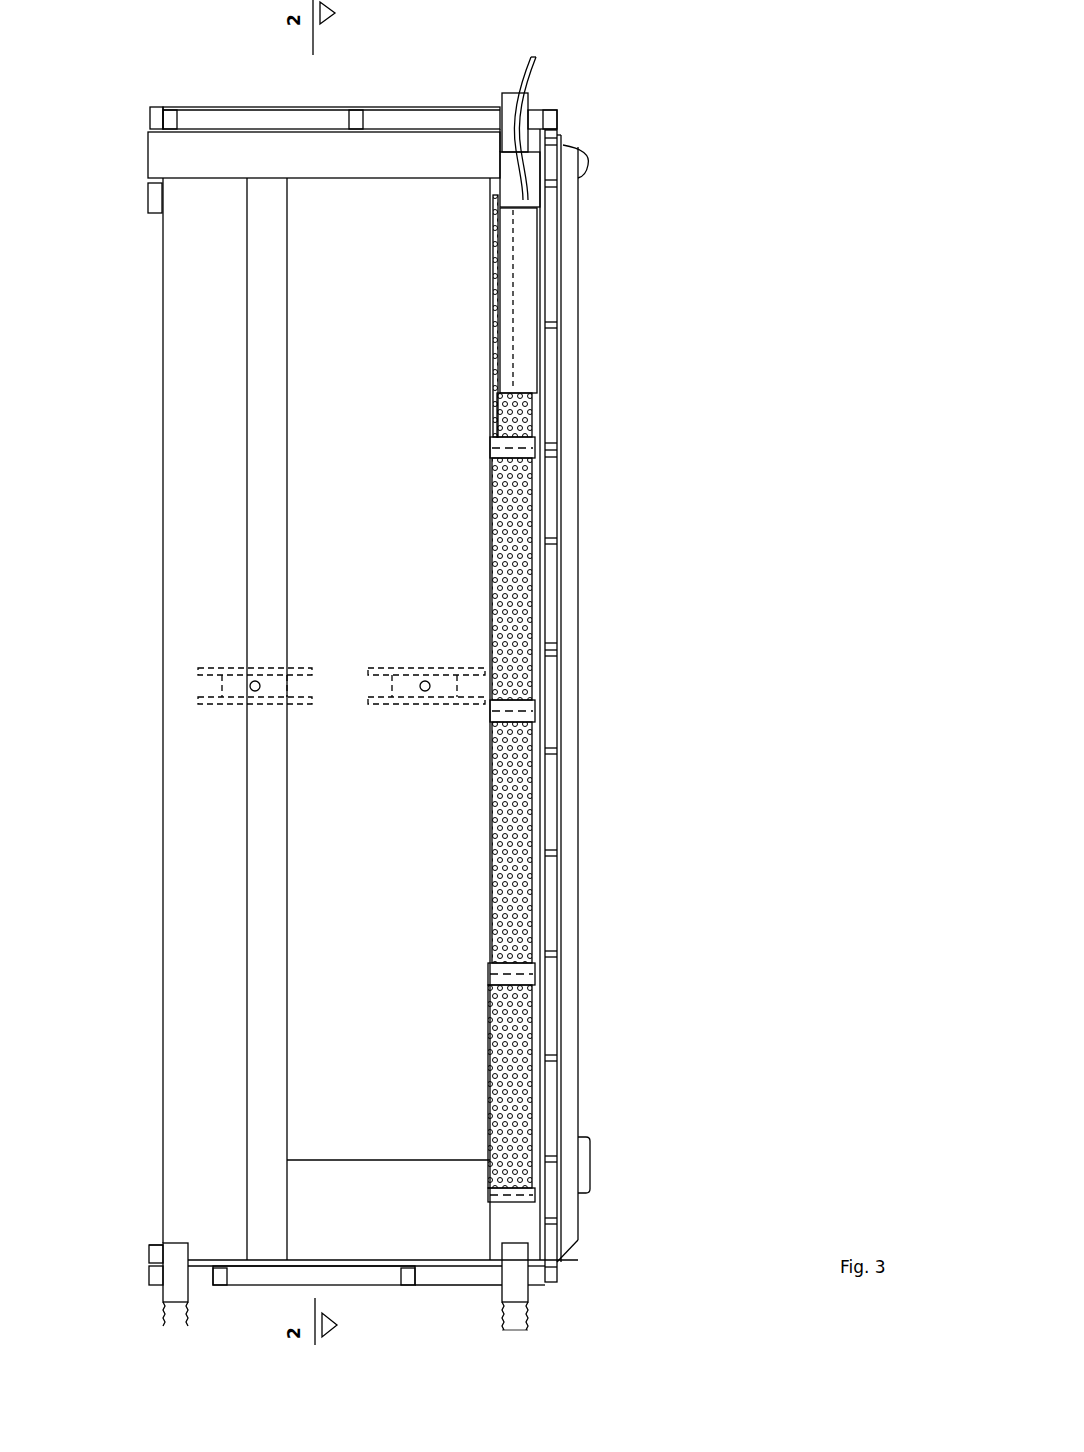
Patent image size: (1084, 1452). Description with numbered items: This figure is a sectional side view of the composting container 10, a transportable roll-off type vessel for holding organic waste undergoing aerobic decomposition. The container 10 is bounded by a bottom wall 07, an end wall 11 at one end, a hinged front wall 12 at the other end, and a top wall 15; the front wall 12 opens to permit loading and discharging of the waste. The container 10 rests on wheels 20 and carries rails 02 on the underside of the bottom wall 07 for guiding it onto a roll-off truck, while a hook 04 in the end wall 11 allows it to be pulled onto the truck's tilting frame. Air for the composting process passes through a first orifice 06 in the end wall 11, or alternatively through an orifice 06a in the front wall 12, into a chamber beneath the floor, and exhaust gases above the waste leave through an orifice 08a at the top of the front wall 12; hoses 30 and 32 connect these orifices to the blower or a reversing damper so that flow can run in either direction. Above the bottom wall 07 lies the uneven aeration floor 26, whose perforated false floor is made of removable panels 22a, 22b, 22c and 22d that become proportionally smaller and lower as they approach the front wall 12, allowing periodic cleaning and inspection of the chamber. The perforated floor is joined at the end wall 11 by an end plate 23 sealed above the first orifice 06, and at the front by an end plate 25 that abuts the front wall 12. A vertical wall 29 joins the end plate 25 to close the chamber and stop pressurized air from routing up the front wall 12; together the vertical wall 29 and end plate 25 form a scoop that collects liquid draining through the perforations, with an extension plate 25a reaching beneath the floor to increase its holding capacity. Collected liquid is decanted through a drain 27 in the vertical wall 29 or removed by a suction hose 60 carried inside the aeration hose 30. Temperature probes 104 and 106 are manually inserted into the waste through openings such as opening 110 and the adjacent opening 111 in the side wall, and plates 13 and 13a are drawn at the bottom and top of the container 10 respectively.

The rails 02 is at (593, 706).
The hook 04 is at (593, 704).
The first orifice 06 is at (552, 1279).
The orifice 06a is at (577, 122).
The bottom wall 07 is at (595, 698).
The orifice 08a is at (122, 160).
The container 10 is at (286, 719).
The end wall 11 is at (198, 1279).
The front wall 12 is at (297, 118).
The bottom plate 13 is at (366, 1287).
The top cover plate 13a is at (325, 93).
The top wall 15 is at (123, 710).
The wheels 20 is at (362, 730).
The removable panel 22a is at (464, 1086).
The removable panel 22b is at (464, 842).
The removable panel 22c is at (465, 590).
The removable panel 22d is at (465, 326).
The end plate 23 is at (457, 1251).
The end plate 25 is at (468, 181).
The extension plate 25a is at (466, 300).
The aeration floor 26 is at (465, 975).
The drain 27 is at (601, 153).
The vertical wall 29 is at (505, 659).
The aeration hose 30 is at (484, 1312).
The hose 32 is at (153, 1285).
The suction hose 60 is at (577, 128).
The temperature probe 104 is at (226, 725).
The temperature probe 106 is at (419, 712).
The opening 110 is at (251, 661).
The bracket 111 is at (426, 661).